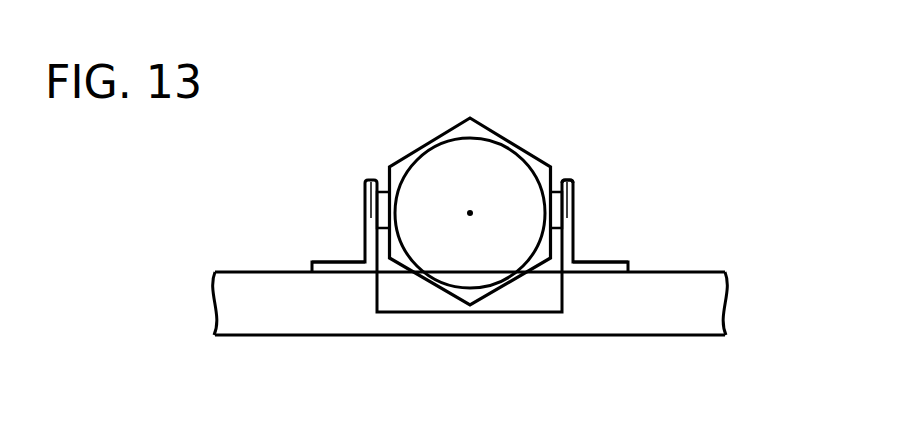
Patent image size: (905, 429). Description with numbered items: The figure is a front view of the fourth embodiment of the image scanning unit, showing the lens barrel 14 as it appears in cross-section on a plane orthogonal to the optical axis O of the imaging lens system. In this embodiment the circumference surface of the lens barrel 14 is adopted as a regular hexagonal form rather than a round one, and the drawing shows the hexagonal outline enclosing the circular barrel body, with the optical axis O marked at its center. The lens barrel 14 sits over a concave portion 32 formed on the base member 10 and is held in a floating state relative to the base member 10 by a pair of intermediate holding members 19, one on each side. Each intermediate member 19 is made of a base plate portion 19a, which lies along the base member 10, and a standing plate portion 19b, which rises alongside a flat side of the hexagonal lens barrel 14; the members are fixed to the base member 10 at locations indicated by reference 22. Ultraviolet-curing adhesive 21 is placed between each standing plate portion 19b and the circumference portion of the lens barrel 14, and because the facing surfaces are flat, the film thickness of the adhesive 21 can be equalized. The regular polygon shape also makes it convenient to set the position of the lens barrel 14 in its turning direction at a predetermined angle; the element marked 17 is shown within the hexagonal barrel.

The base member 10 is at (525, 323).
The lens barrel 14 is at (506, 117).
The cylindrical member 17 is at (438, 162).
The optical axis O is at (470, 217).
The intermediate holding member 19 is at (326, 232).
The base plate portion 19a is at (332, 262).
The standing plate portion 19b is at (568, 179).
The ultraviolet-curing adhesive 21 is at (376, 192).
The bolt 22 is at (340, 275).
The concave portion 32 is at (427, 300).